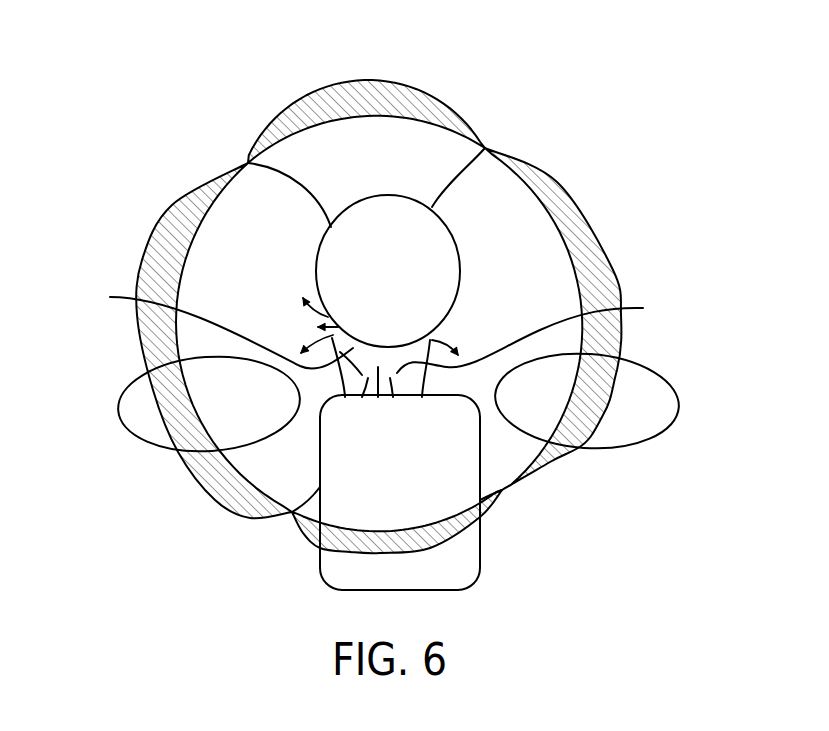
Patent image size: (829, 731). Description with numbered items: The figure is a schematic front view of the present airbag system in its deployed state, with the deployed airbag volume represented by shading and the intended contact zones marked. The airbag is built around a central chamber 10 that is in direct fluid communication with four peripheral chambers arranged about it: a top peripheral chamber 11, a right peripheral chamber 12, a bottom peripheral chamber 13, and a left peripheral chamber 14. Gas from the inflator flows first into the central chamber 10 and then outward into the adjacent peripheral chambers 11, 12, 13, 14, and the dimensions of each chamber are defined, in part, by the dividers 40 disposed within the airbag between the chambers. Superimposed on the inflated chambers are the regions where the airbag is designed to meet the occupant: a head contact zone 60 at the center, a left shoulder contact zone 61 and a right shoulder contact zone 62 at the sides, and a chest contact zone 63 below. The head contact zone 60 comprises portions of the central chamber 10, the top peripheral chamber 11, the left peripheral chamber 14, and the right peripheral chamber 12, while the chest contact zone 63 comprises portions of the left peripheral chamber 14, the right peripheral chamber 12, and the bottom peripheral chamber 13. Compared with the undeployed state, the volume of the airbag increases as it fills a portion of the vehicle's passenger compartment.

The central chamber 10 is at (271, 339).
The top peripheral chamber 11 is at (407, 143).
The right peripheral chamber 12 is at (522, 260).
The bottom peripheral chamber 13 is at (493, 507).
The left peripheral chamber 14 is at (240, 222).
The dividers 40 is at (287, 176).
The head contact zone 60 is at (420, 255).
The left shoulder contact zone 61 is at (133, 407).
The right shoulder contact zone 62 is at (655, 402).
The chest contact zone 63 is at (452, 568).